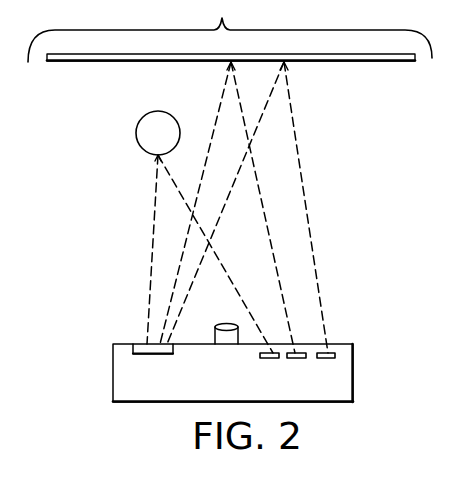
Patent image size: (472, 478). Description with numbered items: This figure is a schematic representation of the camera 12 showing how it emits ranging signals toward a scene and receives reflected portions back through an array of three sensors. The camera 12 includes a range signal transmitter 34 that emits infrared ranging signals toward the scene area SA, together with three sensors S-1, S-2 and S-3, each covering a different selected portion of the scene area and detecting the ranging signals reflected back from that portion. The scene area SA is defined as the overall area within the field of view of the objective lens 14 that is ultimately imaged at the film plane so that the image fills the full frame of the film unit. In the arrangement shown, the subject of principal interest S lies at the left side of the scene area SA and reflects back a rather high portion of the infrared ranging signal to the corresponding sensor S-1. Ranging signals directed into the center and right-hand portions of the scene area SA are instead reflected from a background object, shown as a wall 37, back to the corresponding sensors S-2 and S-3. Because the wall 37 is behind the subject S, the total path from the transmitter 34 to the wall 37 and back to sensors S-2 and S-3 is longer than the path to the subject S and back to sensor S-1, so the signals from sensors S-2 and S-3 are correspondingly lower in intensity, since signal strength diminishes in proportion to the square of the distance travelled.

The scene area SA is at (230, 31).
The wall 37 is at (383, 62).
The subject of principal interest S is at (158, 133).
The camera 12 is at (114, 402).
The range signal transmitter 34 is at (172, 355).
The objective lens 14 is at (227, 322).
The sensor S-1 is at (262, 367).
The sensor S-2 is at (294, 367).
The sensor S-3 is at (332, 367).